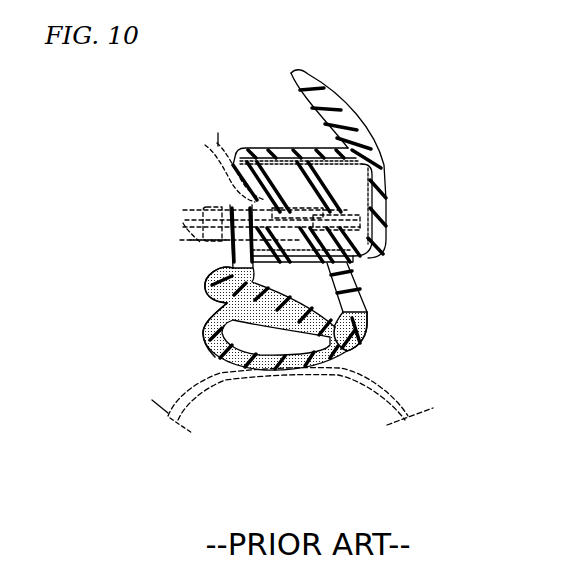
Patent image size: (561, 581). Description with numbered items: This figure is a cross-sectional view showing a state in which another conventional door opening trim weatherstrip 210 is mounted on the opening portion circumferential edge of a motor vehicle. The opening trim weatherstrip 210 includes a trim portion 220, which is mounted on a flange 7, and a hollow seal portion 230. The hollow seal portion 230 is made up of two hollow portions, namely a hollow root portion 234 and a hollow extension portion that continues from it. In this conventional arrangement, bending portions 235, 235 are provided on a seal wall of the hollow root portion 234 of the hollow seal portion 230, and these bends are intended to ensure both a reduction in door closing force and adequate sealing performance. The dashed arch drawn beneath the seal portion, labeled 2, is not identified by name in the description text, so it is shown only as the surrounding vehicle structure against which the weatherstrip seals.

The trim portion 220 is at (389, 158).
The opening trim weatherstrip 210 is at (401, 253).
The flange 7 is at (387, 193).
The hollow root portion 234 is at (358, 274).
The bending portions 235 is at (207, 282).
The hollow seal portion 230 is at (358, 337).
The panel 2 is at (183, 392).